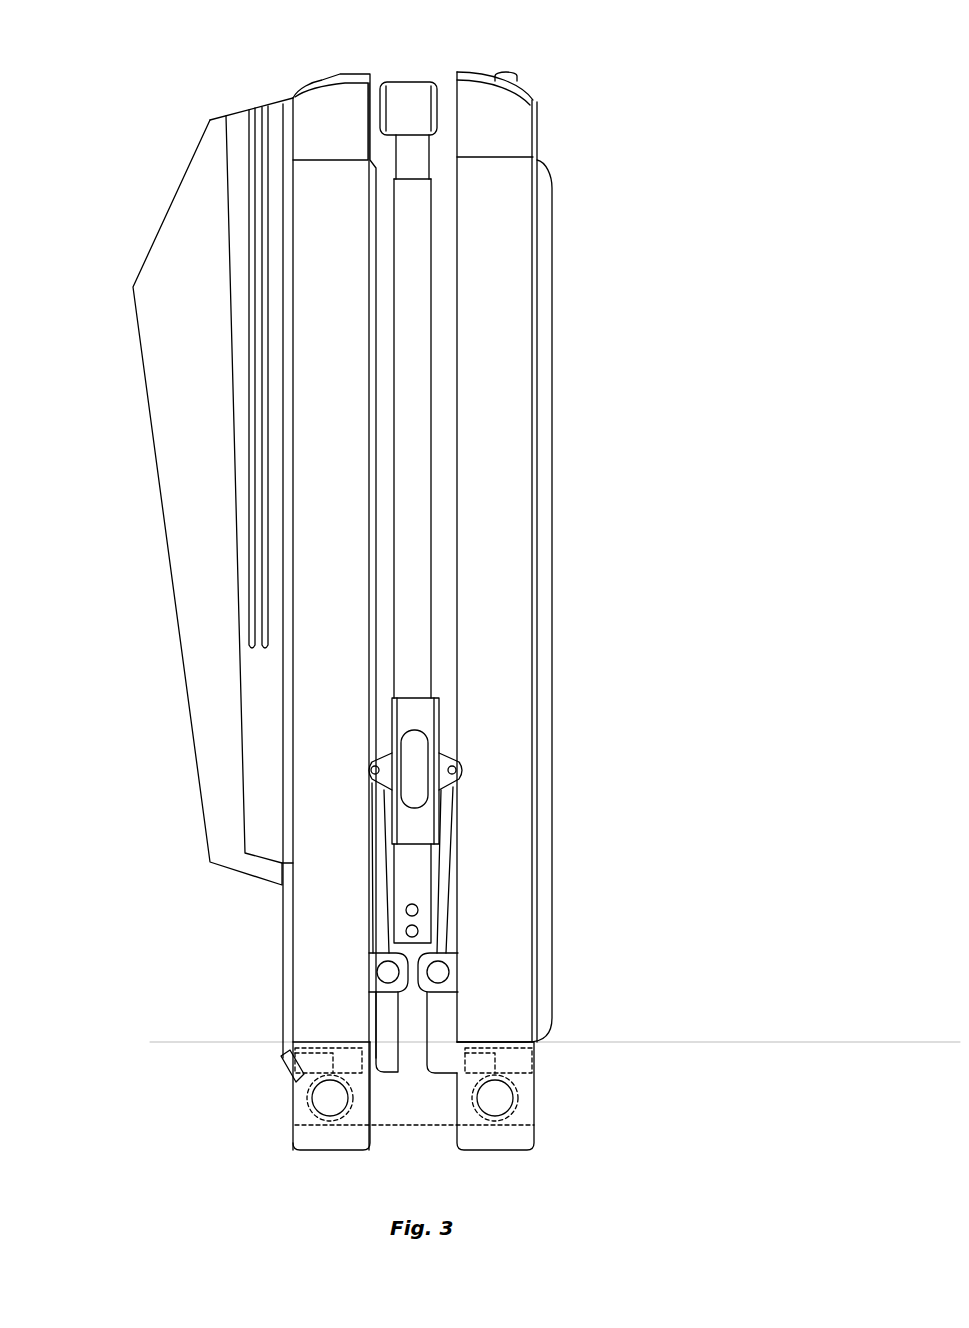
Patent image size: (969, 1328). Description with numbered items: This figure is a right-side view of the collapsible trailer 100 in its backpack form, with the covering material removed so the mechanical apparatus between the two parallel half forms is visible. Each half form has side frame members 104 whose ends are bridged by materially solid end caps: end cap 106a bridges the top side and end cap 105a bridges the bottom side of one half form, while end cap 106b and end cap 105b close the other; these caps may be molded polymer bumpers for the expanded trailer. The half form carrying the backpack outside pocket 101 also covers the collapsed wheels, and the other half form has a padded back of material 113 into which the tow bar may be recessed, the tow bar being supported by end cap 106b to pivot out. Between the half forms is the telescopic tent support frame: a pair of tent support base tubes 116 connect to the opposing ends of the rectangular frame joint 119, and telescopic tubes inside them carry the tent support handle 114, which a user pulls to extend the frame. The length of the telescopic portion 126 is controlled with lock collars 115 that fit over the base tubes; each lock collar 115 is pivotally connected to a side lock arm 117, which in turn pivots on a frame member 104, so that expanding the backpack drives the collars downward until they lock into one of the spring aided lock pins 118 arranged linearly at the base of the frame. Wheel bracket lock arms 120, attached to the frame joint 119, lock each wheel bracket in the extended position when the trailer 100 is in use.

The collapsible trailer 100 is at (684, 166).
The backpack outside pocket 101 is at (147, 262).
The frame member 104 is at (490, 651).
The end cap 105a is at (293, 1132).
The end cap 105b is at (537, 1110).
The end cap 106a is at (312, 82).
The end cap 106b is at (470, 72).
The padding material 113 is at (556, 470).
The tent support handle 114 is at (410, 82).
The lock collar 115 is at (420, 765).
The tent support base tube 116 is at (405, 528).
The side lock arm 117 is at (443, 884).
The spring aided lock pin 118 is at (412, 899).
The frame joint 119 is at (418, 1100).
The wheel bracket lock arm 120 is at (283, 1057).
The telescopic portion 126 is at (408, 155).